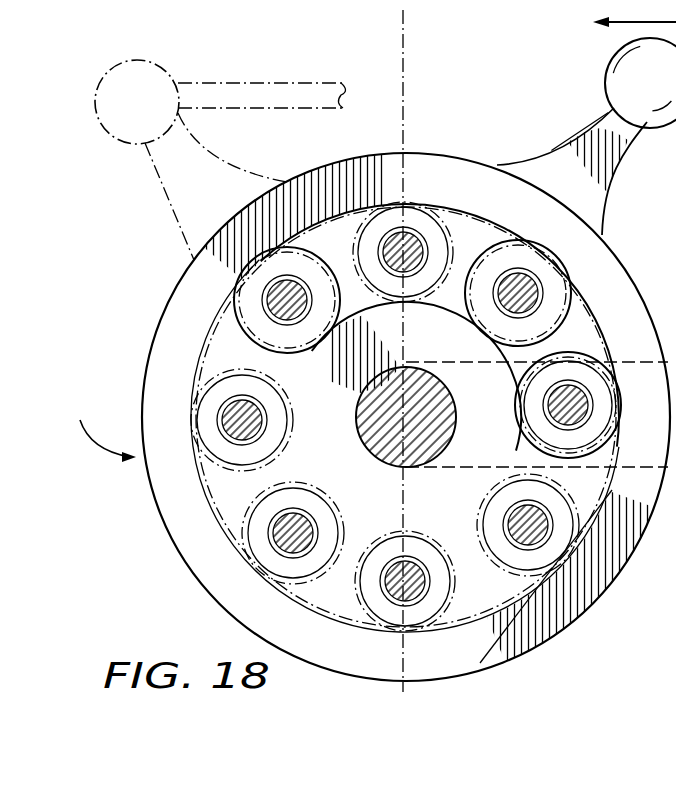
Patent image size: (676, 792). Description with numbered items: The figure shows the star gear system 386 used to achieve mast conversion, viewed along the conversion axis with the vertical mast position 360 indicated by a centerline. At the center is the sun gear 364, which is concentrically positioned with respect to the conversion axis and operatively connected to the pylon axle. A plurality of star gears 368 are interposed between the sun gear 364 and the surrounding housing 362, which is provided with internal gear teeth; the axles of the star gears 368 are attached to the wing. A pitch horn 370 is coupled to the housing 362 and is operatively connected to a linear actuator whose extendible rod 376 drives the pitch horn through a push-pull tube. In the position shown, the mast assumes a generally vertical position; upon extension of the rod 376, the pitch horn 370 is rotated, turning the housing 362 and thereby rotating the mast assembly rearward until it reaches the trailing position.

The vertical mast position 360 is at (405, 58).
The housing 362 is at (195, 553).
The sun gear 364 is at (410, 366).
The star gears 368 is at (498, 232).
The pitch horn 370 is at (164, 180).
The extendible rod 376 is at (320, 82).
The star gear system 386 is at (101, 429).